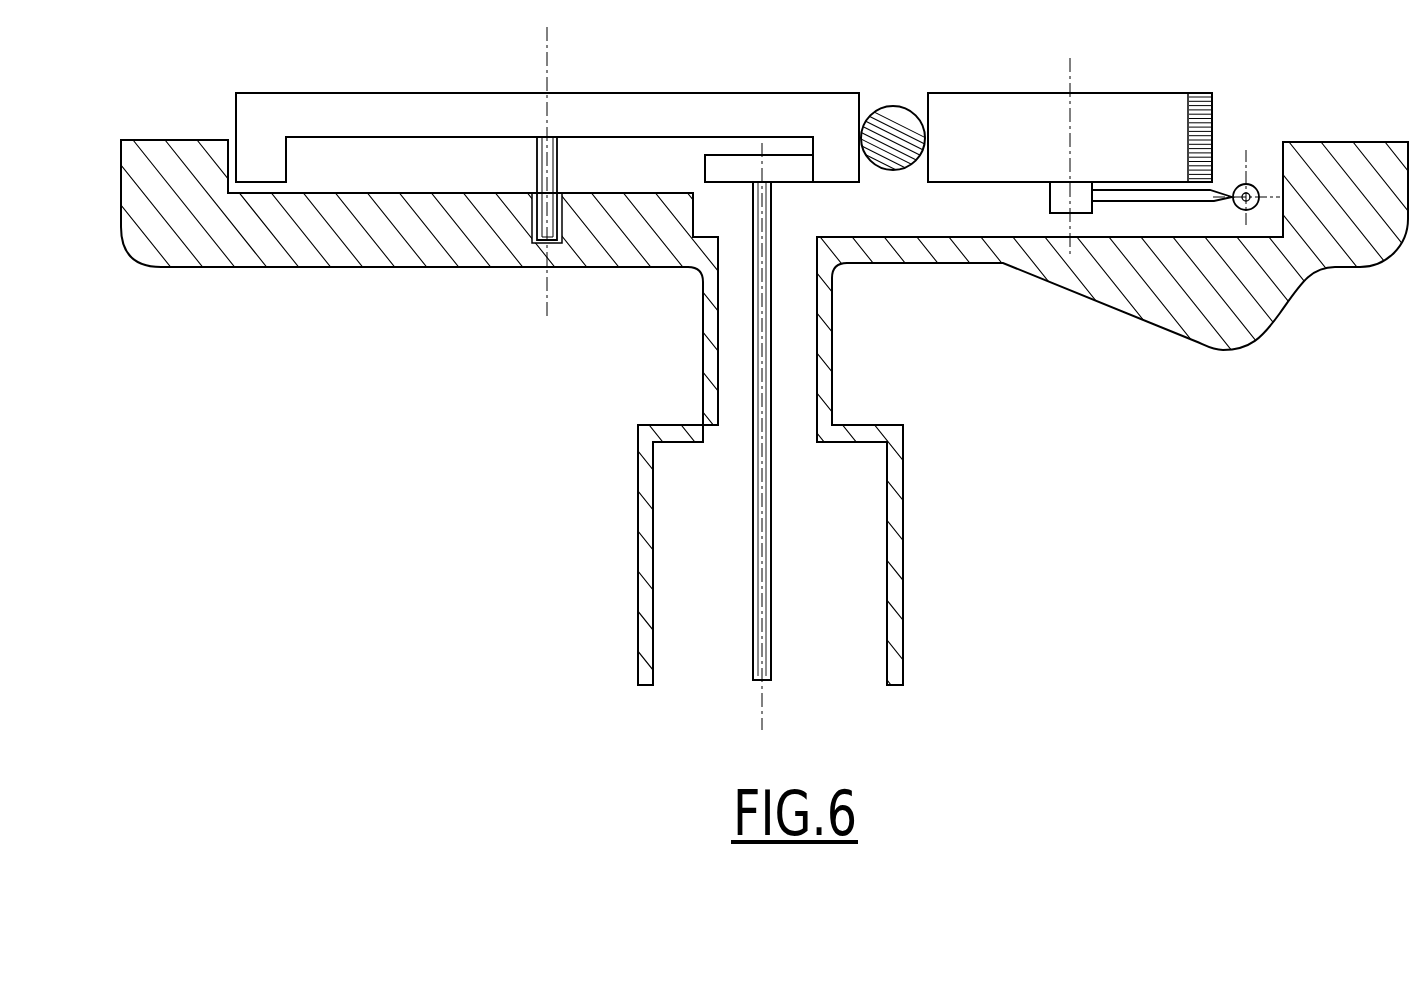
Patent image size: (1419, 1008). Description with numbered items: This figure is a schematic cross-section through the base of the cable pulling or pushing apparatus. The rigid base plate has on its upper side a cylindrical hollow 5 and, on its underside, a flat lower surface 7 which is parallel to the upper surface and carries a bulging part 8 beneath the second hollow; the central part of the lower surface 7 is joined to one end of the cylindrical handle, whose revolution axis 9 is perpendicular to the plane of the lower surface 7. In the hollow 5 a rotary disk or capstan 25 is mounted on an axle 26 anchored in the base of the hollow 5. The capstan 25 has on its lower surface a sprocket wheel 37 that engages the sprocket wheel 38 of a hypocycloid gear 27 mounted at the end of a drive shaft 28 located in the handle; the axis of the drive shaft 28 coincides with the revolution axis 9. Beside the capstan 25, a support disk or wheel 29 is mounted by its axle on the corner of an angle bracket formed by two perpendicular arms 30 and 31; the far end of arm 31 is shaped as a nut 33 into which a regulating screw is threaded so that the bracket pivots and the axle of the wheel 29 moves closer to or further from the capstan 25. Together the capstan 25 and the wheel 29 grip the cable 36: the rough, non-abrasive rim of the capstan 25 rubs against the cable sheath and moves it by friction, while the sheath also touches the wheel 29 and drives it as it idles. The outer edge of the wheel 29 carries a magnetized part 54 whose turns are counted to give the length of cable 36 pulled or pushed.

The cylindrical hollow 5 is at (367, 168).
The lower surface 7 is at (410, 267).
The bulging part 8 is at (1213, 328).
The revolution axis 9 is at (765, 717).
The rotary disk or capstan 25 is at (611, 110).
The axle 26 is at (557, 170).
The hypocycloid gear 27 is at (738, 170).
The drive shaft 28 is at (765, 496).
The support disk or wheel 29 is at (995, 127).
The arm 30 is at (1058, 200).
The arm 31 is at (1220, 193).
The nut 33 is at (1253, 184).
The cable 36 is at (898, 117).
The sprocket wheel 37 is at (842, 163).
The sprocket wheel 38 is at (817, 167).
The magnetized part 54 is at (1213, 117).